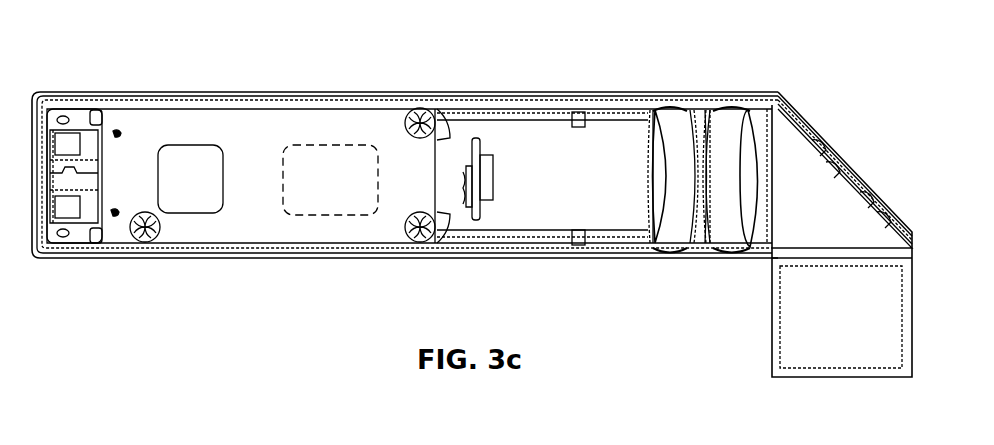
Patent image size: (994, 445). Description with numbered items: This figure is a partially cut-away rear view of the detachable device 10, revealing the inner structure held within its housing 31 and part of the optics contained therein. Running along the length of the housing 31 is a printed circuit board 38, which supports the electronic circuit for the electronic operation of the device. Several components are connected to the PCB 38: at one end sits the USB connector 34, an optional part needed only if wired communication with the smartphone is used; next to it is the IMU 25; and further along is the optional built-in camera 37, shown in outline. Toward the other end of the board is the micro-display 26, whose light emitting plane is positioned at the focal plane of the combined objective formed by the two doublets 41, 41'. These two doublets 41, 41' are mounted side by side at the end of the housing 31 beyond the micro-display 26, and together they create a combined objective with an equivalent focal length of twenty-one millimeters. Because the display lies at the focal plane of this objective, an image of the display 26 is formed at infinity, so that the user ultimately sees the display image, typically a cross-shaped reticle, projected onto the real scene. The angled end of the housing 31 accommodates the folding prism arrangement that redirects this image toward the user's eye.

The device 10 is at (573, 352).
The IMU 25 is at (190, 179).
The micro-display 26 is at (493, 167).
The housing 31 is at (485, 97).
The USB connector 34 is at (76, 233).
The built-in camera 37 is at (330, 180).
The printed circuit board 38 is at (241, 176).
The doublet 41 is at (664, 218).
The doublet 41' is at (736, 239).